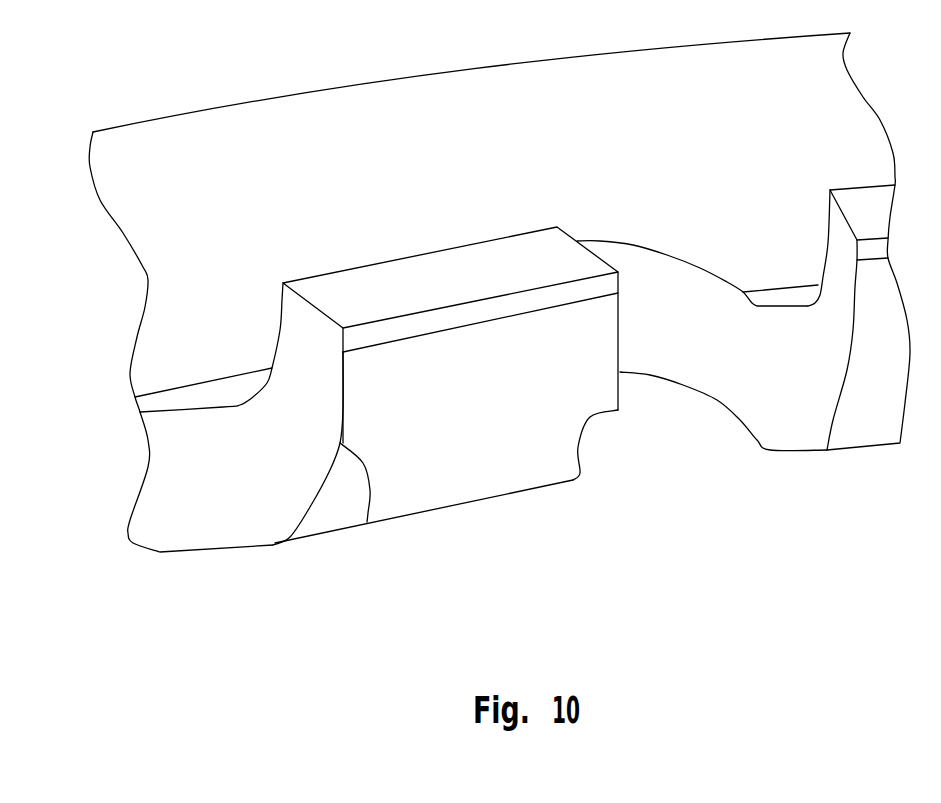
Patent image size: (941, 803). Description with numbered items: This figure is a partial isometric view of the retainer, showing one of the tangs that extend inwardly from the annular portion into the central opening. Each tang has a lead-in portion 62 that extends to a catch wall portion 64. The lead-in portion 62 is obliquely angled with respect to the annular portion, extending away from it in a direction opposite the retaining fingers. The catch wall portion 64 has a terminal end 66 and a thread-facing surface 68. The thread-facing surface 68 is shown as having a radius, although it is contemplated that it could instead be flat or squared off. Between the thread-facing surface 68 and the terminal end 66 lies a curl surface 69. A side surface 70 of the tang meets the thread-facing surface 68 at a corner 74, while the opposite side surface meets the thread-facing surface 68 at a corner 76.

The lead-in portion 62 is at (182, 405).
The catch wall portion 64 is at (268, 338).
The terminal end 66 is at (392, 283).
The curl surface 69 is at (520, 300).
The thread-facing surface 68 is at (503, 423).
The side surface 70 is at (325, 410).
The corner 74 is at (368, 522).
The corner 76 is at (578, 470).